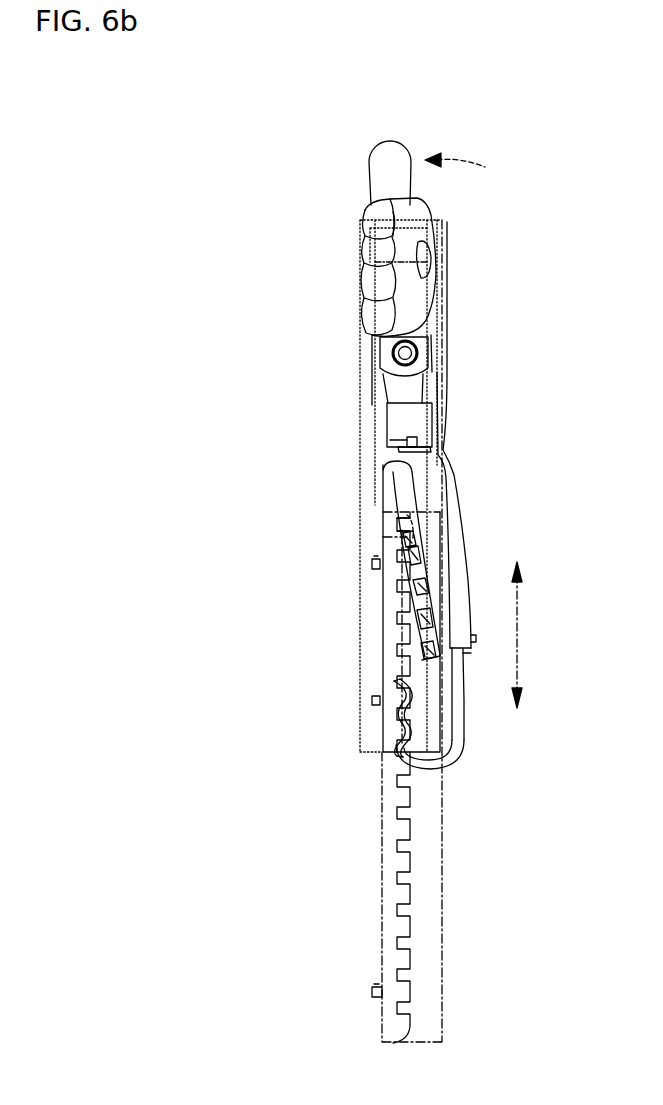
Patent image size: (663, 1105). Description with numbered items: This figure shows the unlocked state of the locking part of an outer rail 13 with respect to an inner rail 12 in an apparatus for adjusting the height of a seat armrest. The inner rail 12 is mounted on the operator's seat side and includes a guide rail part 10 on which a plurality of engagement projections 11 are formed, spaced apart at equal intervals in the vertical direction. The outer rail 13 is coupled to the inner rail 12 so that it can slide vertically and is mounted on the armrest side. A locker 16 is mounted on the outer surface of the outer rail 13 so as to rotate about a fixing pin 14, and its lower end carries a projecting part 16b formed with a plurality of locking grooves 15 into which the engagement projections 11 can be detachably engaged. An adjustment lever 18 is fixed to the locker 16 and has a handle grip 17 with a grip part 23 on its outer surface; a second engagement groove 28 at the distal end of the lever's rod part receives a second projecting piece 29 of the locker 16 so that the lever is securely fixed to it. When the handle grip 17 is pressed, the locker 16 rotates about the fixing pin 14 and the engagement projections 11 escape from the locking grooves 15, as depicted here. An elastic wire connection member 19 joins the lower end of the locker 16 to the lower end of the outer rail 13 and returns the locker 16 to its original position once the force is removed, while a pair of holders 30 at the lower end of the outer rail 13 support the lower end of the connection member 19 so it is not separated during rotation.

The guide rail part 10 is at (383, 903).
The engagement projections 11 is at (410, 1000).
The inner rail 12 is at (444, 915).
The outer rail 13 is at (360, 497).
The fixing pin 14 is at (388, 356).
The locking grooves 15 is at (380, 645).
The locker 16 is at (453, 503).
The projecting part 16b is at (410, 585).
The handle grip 17 is at (420, 207).
The adjustment lever 18 is at (399, 139).
The connection member 19 is at (447, 752).
The grip part 23 is at (367, 260).
The second engagement groove 28 is at (390, 422).
The second projecting piece 29 is at (380, 442).
The holders 30 is at (395, 705).